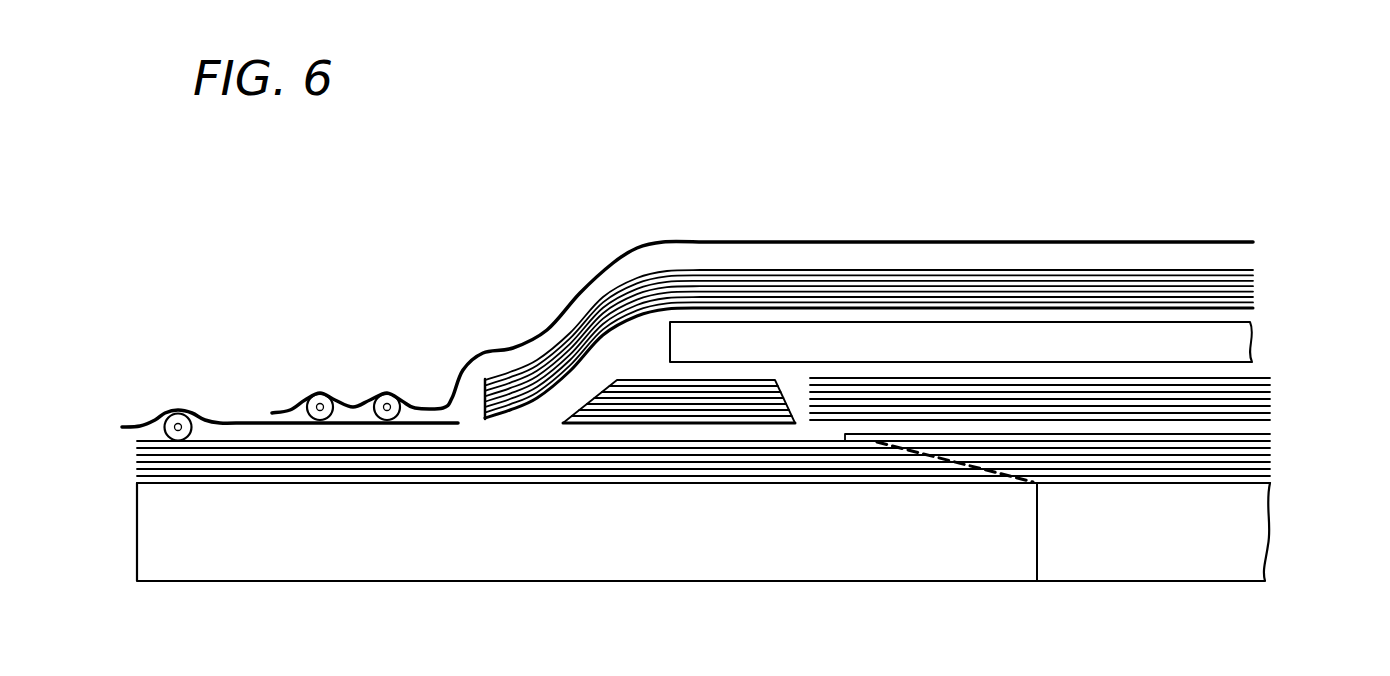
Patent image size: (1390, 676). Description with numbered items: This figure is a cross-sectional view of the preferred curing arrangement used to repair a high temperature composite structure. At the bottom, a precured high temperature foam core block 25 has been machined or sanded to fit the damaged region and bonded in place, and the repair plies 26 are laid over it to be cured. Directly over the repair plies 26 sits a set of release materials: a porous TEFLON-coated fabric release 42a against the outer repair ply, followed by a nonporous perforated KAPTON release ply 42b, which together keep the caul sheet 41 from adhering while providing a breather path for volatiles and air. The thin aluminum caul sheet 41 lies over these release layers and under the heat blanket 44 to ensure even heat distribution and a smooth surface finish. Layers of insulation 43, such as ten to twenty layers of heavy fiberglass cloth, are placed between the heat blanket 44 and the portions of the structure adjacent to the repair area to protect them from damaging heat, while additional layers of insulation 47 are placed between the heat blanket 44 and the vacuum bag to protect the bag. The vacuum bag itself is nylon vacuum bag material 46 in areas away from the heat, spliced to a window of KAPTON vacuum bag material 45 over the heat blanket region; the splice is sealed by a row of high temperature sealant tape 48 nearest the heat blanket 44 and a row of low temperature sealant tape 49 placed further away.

The core block 25 is at (1257, 520).
The repair plies 26 is at (1281, 428).
The caul sheet 41 is at (1268, 378).
The porous release 42a is at (1270, 418).
The nonporous perforated release ply 42b is at (1268, 393).
The layers of insulation 43 is at (613, 390).
The heat blanket 44 is at (1253, 337).
The KAPTON vacuum bag material 45 is at (910, 240).
The nylon vacuum bag material 46 is at (135, 422).
The layers of insulation 47 is at (1255, 283).
The high temperature sealant tape 48 is at (392, 390).
The low temperature sealant tape 49 is at (180, 417).